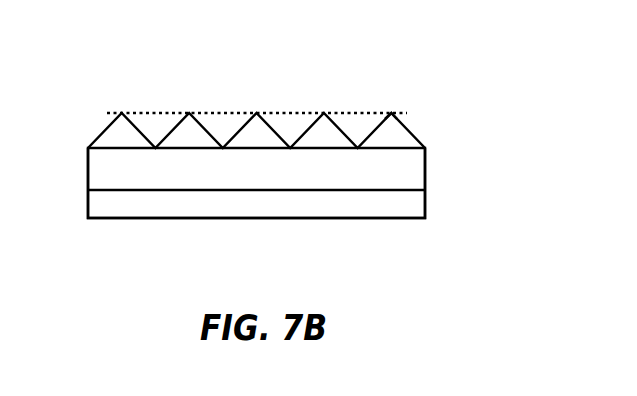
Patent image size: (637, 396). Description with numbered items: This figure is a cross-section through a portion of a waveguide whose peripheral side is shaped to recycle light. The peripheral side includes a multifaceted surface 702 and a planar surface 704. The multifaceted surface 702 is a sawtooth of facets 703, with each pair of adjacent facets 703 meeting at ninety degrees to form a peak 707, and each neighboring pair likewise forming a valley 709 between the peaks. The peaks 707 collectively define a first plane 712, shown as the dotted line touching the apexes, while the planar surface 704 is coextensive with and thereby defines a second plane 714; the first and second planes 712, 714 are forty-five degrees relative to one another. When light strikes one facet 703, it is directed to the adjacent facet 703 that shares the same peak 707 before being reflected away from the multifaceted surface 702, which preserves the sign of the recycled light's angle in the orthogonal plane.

The multifaceted surface 702 is at (438, 130).
The facets 703 is at (177, 126).
The planar surface 704 is at (256, 229).
The peaks 707 is at (105, 130).
The valleys 709 is at (157, 149).
The first plane 712 is at (386, 111).
The second plane 714 is at (268, 209).